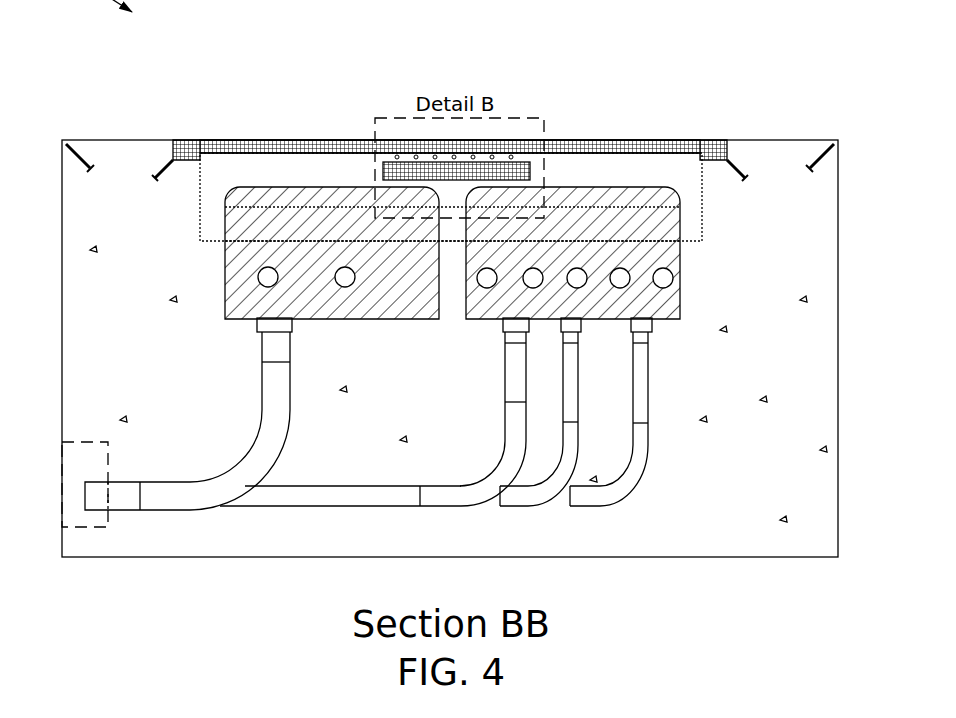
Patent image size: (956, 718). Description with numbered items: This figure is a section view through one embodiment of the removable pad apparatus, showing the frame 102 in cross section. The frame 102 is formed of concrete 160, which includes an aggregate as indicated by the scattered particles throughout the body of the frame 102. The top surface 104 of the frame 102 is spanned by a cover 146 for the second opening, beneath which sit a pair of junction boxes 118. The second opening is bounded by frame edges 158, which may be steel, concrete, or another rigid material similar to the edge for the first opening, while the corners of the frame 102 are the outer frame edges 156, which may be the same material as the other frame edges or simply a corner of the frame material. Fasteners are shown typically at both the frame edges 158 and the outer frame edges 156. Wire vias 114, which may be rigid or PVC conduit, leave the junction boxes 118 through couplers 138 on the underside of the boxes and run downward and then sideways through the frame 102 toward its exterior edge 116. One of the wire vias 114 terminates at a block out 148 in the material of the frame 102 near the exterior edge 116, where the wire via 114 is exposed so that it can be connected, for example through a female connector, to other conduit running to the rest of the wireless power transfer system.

The frame 102 is at (197, 560).
The top surface 104 is at (128, 138).
The wire via 114 is at (345, 268).
The exterior edge 116 is at (66, 364).
The junction box 118 is at (278, 217).
The coupler 138 is at (262, 313).
The cover 146 is at (617, 138).
The block out 148 is at (92, 528).
The outer frame edge 156 is at (840, 54).
The frame edge 158 is at (178, 138).
The concrete 160 is at (763, 500).